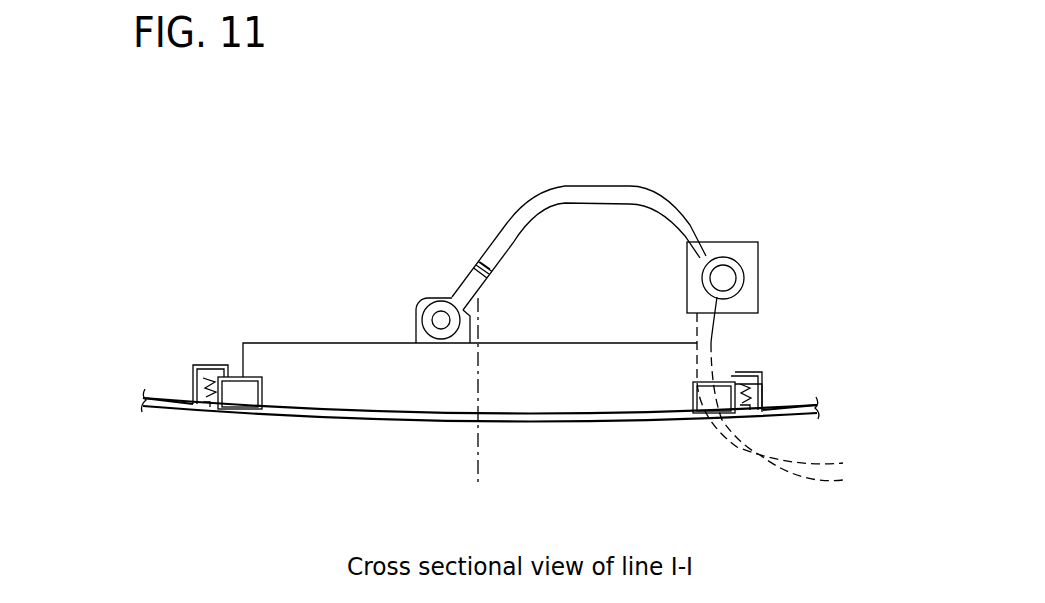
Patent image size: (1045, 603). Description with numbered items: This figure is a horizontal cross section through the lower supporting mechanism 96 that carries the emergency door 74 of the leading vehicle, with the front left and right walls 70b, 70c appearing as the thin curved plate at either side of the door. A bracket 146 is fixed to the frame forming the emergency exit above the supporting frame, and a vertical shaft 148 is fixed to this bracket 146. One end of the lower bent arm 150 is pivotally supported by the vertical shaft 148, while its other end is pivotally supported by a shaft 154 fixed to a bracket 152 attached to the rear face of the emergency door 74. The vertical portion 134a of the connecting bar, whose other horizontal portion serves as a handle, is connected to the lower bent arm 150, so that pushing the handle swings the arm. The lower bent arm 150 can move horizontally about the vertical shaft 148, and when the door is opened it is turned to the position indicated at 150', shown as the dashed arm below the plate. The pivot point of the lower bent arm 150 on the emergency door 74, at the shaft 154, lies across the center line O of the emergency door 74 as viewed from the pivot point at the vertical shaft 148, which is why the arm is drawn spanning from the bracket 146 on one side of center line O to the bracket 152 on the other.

The lower supporting mechanism 96 is at (723, 195).
The lower bent arm 150 is at (579, 199).
The lower bent arm in turned position 150' is at (770, 414).
The vertical portion of the connecting bar 134a is at (478, 263).
The shaft 154 is at (430, 297).
The bracket 152 is at (478, 327).
The vertical shaft 148 is at (730, 277).
The bracket 146 is at (760, 290).
The center line of the emergency door O is at (478, 392).
The emergency door 74 is at (363, 421).
The front left wall 70b is at (788, 420).
The front right wall 70c is at (163, 407).